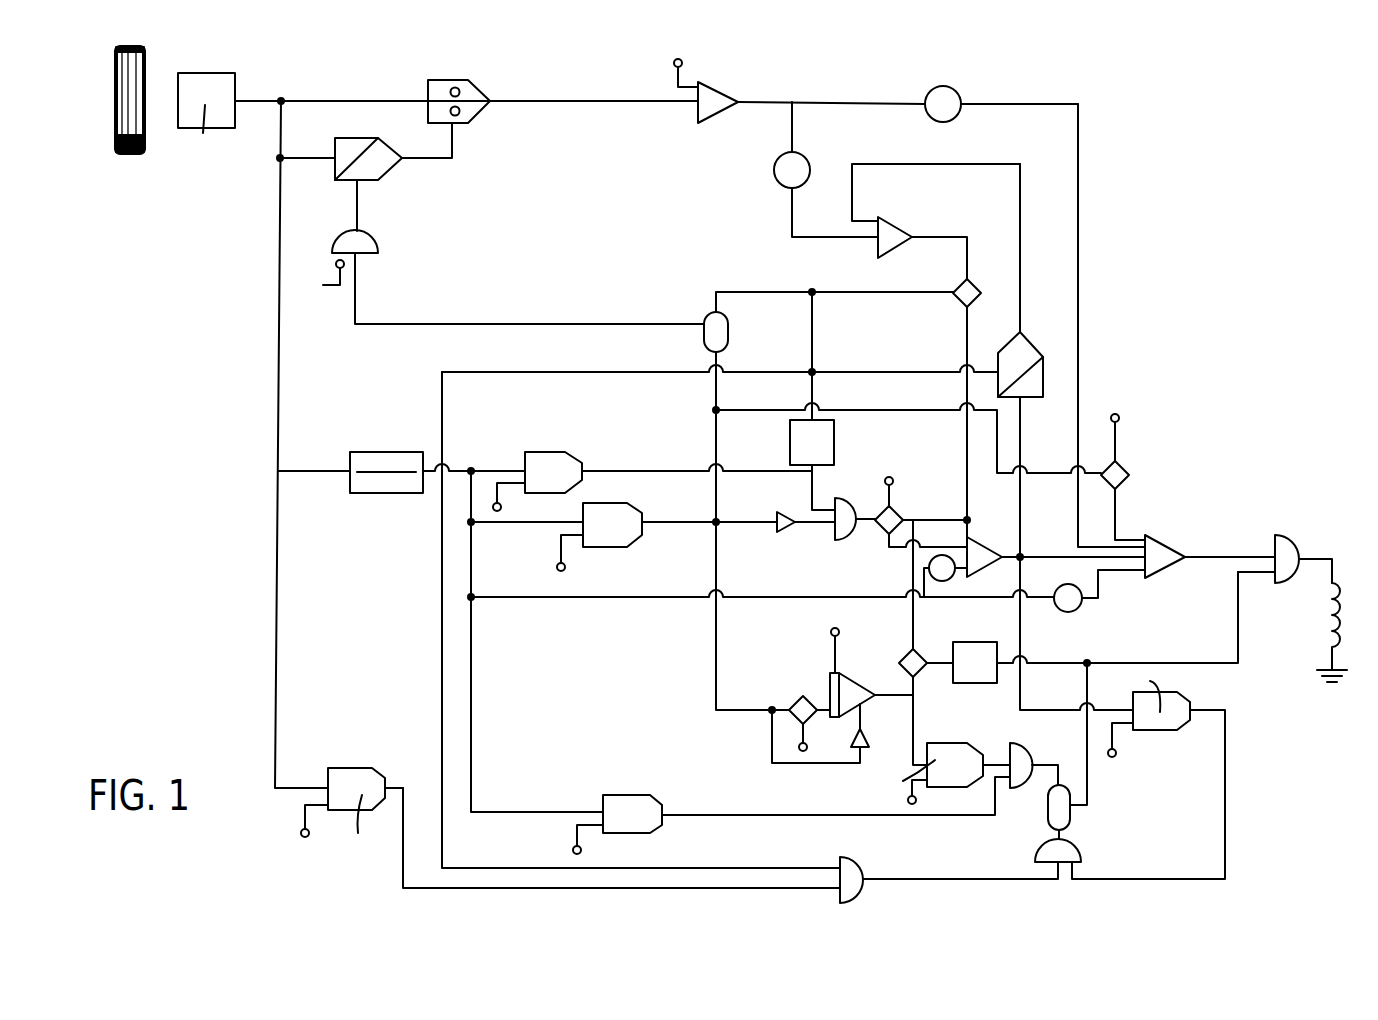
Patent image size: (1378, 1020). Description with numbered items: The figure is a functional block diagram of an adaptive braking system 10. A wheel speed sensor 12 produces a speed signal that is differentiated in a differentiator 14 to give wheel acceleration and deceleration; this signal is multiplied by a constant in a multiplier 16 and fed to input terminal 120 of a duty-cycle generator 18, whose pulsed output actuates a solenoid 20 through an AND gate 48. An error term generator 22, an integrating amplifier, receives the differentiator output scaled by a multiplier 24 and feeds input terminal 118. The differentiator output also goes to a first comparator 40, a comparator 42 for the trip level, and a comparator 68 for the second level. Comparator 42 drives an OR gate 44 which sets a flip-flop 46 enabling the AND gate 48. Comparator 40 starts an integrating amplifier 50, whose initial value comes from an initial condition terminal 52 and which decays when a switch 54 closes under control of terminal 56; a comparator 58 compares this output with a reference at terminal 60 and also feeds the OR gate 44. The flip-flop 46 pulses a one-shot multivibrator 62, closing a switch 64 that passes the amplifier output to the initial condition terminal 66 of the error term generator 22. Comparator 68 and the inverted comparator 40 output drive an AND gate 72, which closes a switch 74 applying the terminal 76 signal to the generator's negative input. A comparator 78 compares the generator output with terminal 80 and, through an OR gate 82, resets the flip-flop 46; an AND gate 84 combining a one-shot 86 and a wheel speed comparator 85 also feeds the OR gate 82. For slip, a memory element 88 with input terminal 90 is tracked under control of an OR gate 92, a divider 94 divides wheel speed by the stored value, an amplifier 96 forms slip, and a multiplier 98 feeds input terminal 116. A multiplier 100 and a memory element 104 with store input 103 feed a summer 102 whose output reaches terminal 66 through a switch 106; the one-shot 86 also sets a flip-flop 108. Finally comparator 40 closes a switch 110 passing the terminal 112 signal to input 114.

The adaptive braking system 10 is at (310, 89).
The wheel speed sensor 12 is at (199, 61).
The differentiator 14 is at (353, 452).
The multiplier 16 is at (1066, 584).
The duty-cycle generator 18 is at (1180, 552).
The solenoid 20 is at (1326, 612).
The error term generator 22 is at (982, 541).
The multiplier 24 is at (955, 578).
The first comparator 40 is at (631, 547).
The comparator 42 is at (650, 795).
The OR gate 44 is at (1030, 760).
The flip-flop 46 is at (1075, 810).
The AND gate 48 is at (1290, 540).
The integrating amplifier 50 is at (852, 678).
The initial condition terminal 52 is at (828, 645).
The switch 54 is at (789, 704).
The terminal 56 is at (808, 745).
The comparator 58 is at (968, 745).
The terminal 60 is at (918, 798).
The one-shot multivibrator 62 is at (986, 642).
The switch 64 is at (915, 650).
The initial condition terminal 66 is at (975, 520).
The comparator 68 is at (543, 452).
The AND gate 72 is at (842, 503).
The switch 74 is at (905, 500).
The terminal 76 is at (900, 480).
The comparator 78 is at (1186, 693).
The terminal 80 is at (1118, 746).
The OR gate 82 is at (1082, 851).
The AND gate 84 is at (866, 870).
The comparator 85 is at (370, 768).
The one-shot 86 is at (836, 428).
The memory element 88 is at (394, 172).
The input terminal 90 is at (303, 165).
The OR gate 92 is at (365, 241).
The divider 94 is at (489, 86).
The amplifier 96 is at (727, 92).
The multiplier 98 is at (960, 93).
The multiplier 100 is at (775, 167).
The summer 102 is at (904, 226).
The store input 103 is at (983, 372).
The memory element 104 is at (1030, 346).
The switch 106 is at (955, 287).
The flip-flop 108 is at (704, 318).
The switch 110 is at (1130, 468).
The terminal 112 is at (1121, 430).
The input 114 is at (1135, 540).
The input terminal 116 is at (1096, 548).
The input terminal 118 is at (1060, 555).
The input terminal 120 is at (1125, 573).